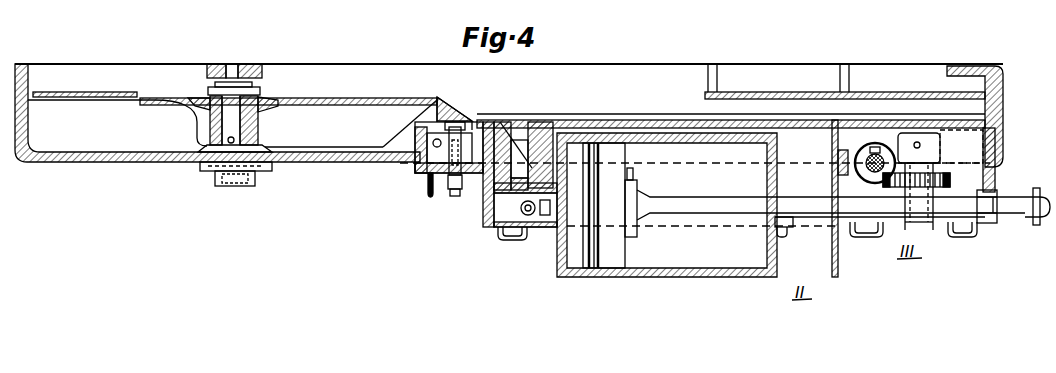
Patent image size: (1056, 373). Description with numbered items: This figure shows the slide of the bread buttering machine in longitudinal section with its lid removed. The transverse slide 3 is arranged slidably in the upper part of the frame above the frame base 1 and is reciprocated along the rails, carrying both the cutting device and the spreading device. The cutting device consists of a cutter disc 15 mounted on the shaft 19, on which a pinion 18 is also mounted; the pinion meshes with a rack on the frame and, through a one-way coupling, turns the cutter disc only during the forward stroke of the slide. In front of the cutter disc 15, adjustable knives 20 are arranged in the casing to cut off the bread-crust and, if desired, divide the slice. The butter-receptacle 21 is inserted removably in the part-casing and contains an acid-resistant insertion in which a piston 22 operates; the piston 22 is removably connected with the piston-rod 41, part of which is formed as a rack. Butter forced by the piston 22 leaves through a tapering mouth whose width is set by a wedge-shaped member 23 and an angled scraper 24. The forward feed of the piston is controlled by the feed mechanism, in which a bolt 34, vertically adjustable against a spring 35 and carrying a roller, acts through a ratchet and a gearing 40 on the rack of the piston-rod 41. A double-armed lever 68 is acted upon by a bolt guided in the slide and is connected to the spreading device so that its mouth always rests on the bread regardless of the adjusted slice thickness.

The frame base 1 is at (541, 224).
The transverse slide 3 is at (176, 160).
The cutter disc 15 is at (343, 100).
The pinion 18 is at (246, 65).
The shaft of the cutter disc 19 is at (258, 127).
The knives 20 is at (458, 121).
The butter-receptacle 21 is at (701, 258).
The piston 22 is at (617, 255).
The wedge-shaped member 23 is at (505, 124).
The scraper 24 is at (547, 121).
The bolt 34 is at (870, 148).
The spring 35 is at (870, 123).
The gearing 40 is at (952, 183).
The piston-rod 41 is at (785, 198).
The double-armed lever 68 is at (555, 204).